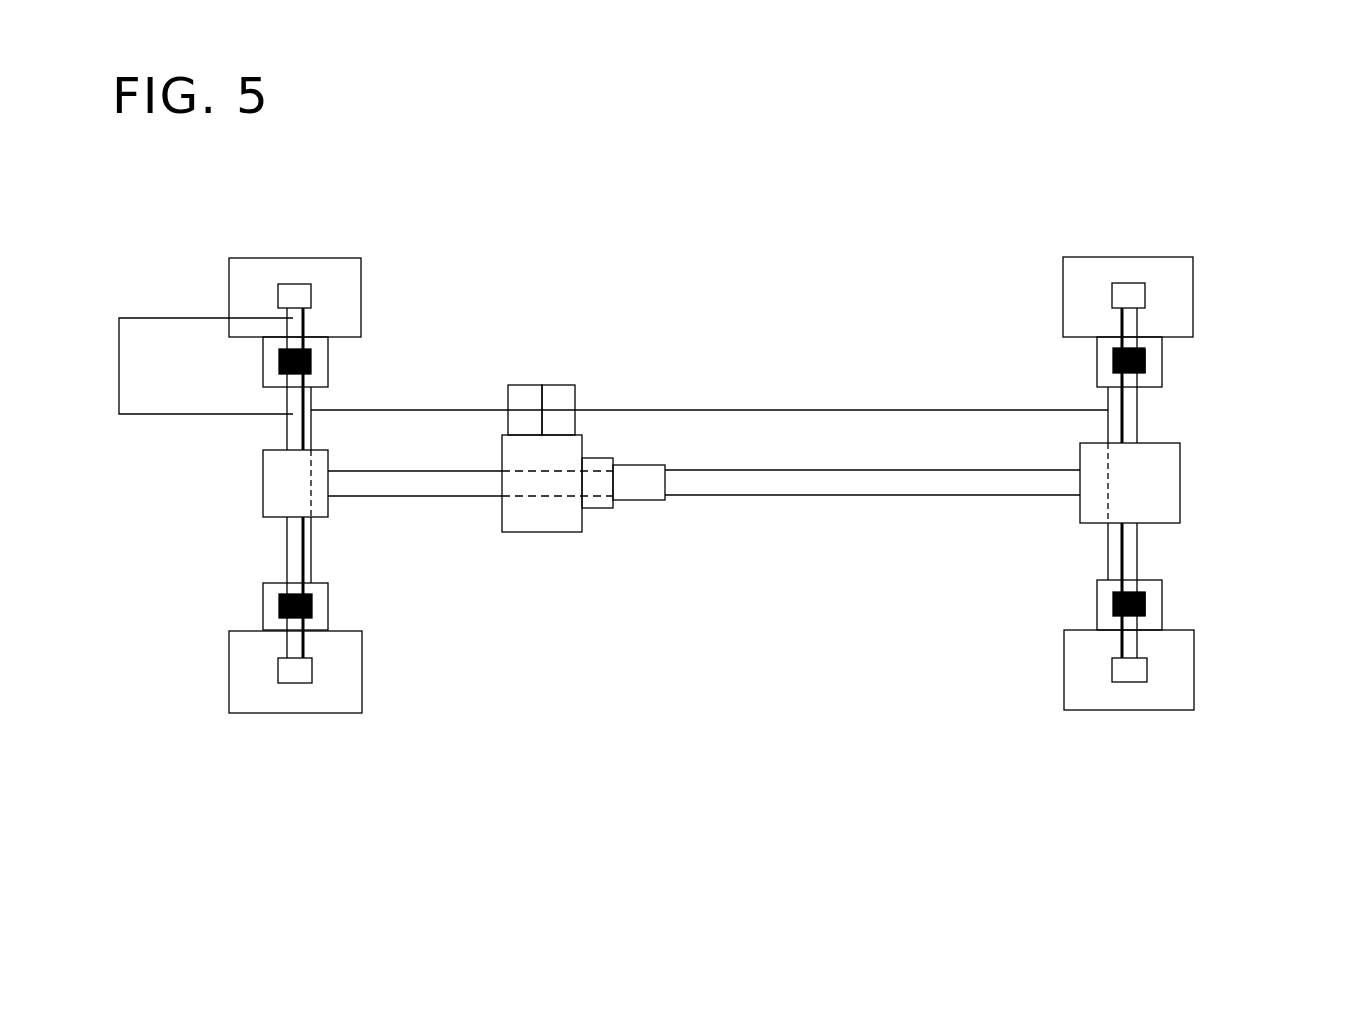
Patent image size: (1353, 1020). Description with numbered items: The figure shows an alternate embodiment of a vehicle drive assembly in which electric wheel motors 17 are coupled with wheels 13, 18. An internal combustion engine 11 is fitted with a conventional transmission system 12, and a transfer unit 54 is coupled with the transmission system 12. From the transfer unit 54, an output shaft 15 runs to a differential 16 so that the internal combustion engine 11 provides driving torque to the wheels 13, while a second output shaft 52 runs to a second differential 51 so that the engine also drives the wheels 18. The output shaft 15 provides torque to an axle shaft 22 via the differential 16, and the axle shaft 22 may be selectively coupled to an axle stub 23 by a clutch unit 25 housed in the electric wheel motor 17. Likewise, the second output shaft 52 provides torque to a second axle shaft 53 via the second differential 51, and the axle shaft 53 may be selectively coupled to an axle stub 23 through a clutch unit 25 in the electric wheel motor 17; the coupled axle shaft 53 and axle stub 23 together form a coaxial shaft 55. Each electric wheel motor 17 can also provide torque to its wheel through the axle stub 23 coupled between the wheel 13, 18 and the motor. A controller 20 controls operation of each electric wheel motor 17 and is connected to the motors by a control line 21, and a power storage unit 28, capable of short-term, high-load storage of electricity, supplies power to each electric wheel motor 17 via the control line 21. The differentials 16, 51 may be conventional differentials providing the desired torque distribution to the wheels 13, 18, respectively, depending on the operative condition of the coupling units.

The internal combustion engine 11 is at (566, 536).
The transmission system 12 is at (640, 520).
The wheels 13 is at (1093, 484).
The output shaft 15 is at (872, 519).
The differential 16 is at (1163, 482).
The electric wheel motor 17 is at (272, 372).
The wheels 18 is at (262, 482).
The controller 20 is at (600, 371).
The control line 21 is at (709, 455).
The axle shaft 22 is at (1224, 483).
The axle stub 23 is at (776, 483).
The clutch unit 25 is at (1217, 482).
The power storage unit 28 is at (561, 352).
The second differential 51 is at (275, 487).
The second output shaft 52 is at (470, 460).
The second axle shaft 53 is at (297, 436).
The transfer unit 54 is at (670, 460).
The coaxial shaft 55 is at (196, 366).